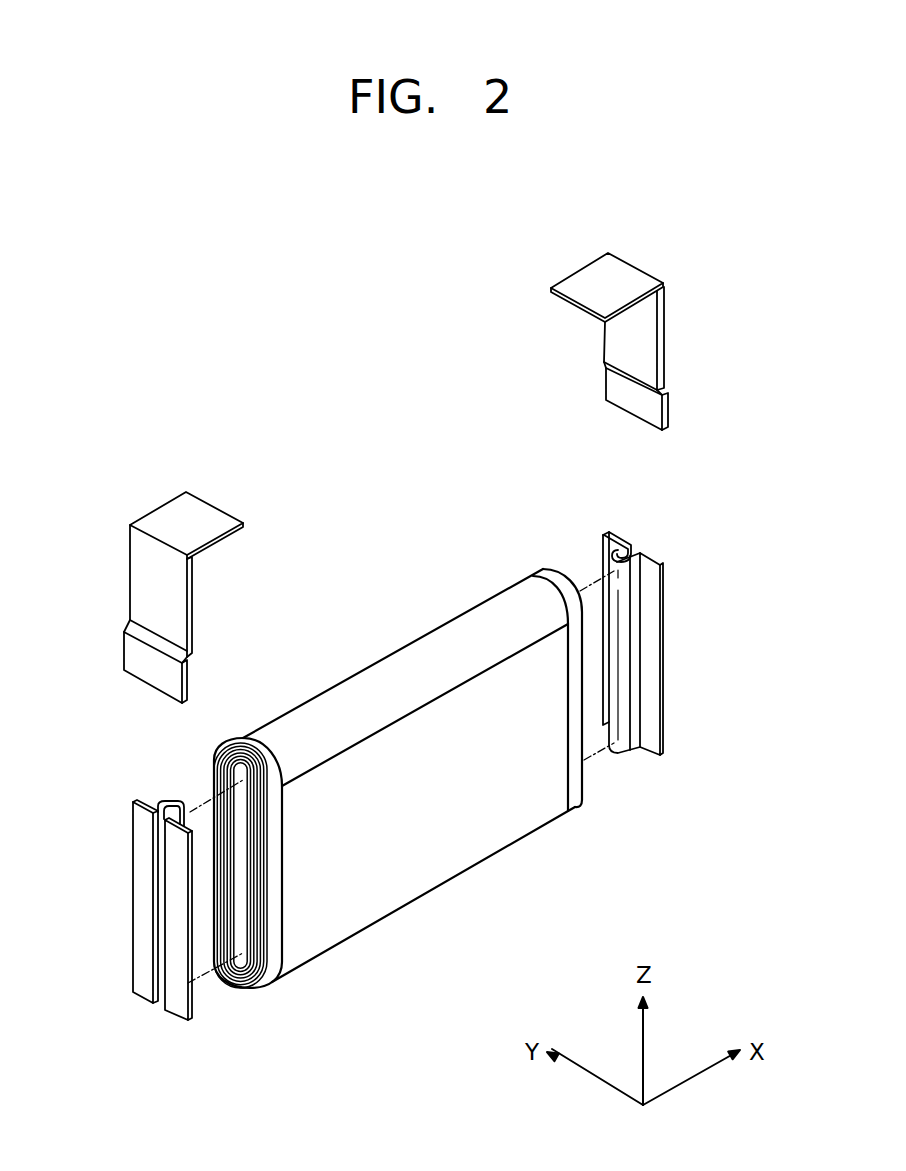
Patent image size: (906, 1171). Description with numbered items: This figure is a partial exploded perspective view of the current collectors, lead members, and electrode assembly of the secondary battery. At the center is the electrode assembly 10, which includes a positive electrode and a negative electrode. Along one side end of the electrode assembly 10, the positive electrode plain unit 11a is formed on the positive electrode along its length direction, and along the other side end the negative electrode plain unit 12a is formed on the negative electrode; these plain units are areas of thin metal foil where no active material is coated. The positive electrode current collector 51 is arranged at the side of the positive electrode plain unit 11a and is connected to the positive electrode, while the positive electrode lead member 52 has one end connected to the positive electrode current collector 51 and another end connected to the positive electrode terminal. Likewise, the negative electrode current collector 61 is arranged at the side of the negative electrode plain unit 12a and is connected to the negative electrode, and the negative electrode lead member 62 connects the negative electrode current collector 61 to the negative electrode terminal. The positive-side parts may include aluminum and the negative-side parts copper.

The electrode assembly 10 is at (438, 912).
The positive electrode plain unit 11a is at (277, 955).
The negative electrode plain unit 12a is at (582, 805).
The positive electrode current collector 51 is at (120, 876).
The positive electrode lead member 52 is at (124, 514).
The negative electrode current collector 61 is at (683, 630).
The negative electrode lead member 62 is at (548, 268).